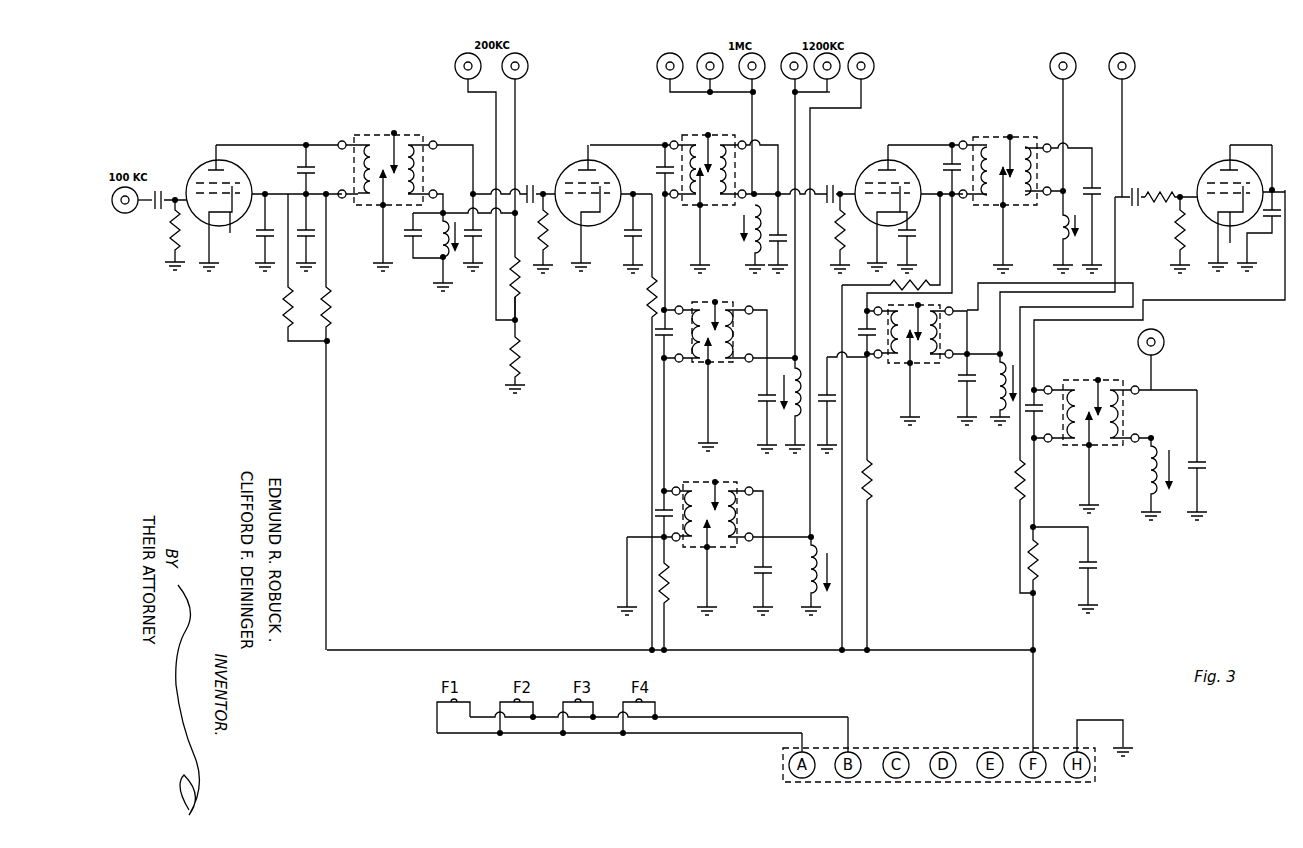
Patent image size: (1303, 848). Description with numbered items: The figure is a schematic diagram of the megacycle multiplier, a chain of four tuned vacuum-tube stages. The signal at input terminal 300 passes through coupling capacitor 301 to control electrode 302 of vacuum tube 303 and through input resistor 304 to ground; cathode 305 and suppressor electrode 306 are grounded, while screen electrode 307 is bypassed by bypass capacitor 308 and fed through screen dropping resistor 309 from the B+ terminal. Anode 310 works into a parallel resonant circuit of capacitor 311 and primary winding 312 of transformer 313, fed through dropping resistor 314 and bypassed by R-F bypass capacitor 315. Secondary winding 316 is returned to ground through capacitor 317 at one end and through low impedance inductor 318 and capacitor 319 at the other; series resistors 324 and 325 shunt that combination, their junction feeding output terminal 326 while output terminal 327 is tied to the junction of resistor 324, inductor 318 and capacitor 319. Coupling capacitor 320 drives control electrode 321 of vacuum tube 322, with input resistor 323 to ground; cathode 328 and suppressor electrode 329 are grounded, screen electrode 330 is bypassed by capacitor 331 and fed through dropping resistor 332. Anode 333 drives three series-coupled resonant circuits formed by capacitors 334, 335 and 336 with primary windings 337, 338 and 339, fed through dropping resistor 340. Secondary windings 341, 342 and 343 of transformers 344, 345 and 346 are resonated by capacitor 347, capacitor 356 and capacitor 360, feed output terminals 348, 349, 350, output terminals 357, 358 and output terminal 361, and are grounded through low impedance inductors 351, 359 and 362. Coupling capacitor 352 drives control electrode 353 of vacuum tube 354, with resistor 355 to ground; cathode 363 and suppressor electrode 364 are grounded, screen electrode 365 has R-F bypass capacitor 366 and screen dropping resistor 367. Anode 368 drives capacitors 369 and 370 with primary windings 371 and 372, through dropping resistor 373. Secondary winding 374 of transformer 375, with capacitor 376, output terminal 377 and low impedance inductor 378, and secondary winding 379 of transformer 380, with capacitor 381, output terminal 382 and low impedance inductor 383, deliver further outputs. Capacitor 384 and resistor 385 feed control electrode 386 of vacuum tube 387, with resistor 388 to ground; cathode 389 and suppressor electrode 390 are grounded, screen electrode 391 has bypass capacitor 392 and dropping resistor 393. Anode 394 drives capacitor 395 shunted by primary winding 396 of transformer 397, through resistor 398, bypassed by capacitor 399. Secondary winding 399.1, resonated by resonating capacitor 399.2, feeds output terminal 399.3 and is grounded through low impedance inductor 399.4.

The input terminal 300 is at (134, 212).
The coupling capacitor 301 is at (160, 190).
The control electrode 302 is at (231, 234).
The vacuum tube 303 is at (252, 180).
The input resistor 304 is at (172, 228).
The cathode 305 is at (206, 240).
The suppressor electrode 306 is at (237, 176).
The screen electrode 307 is at (197, 182).
The bypass capacitor 308 is at (262, 245).
The screen dropping resistor 309 is at (283, 303).
The anode 310 is at (216, 160).
The capacitor 311 is at (300, 160).
The primary winding 312 is at (340, 141).
The transformer 313 is at (371, 116).
The dropping resistor 314 is at (333, 294).
The R-F bypass capacitor 315 is at (306, 250).
The secondary winding 316 is at (434, 181).
The capacitor 317 is at (470, 250).
The low impedance inductor 318 is at (440, 262).
The capacitor 319 is at (410, 250).
The coupling capacitor 320 is at (530, 184).
The control electrode 321 is at (548, 225).
The vacuum tube 322 is at (559, 150).
The input resistor 323 is at (522, 276).
The resistor 324 is at (519, 316).
The resistor 325 is at (518, 372).
The output terminal 326 is at (455, 60).
The output terminal 327 is at (528, 67).
The cathode 328 is at (586, 240).
The suppressor electrode 329 is at (600, 171).
The screen electrode 330 is at (611, 181).
The capacitor 331 is at (630, 250).
The dropping resistor 332 is at (648, 290).
The anode 333 is at (592, 150).
The capacitor 334 is at (665, 160).
The capacitor 335 is at (655, 332).
The capacitor 336 is at (655, 508).
The primary winding 337 is at (676, 141).
The primary winding 338 is at (700, 360).
The primary winding 339 is at (696, 546).
The dropping resistor 340 is at (666, 600).
The secondary winding 341 is at (701, 206).
The secondary winding 342 is at (731, 363).
The secondary winding 343 is at (718, 548).
The transformer 344 is at (698, 118).
The transformer 345 is at (703, 295).
The interstage transformer 346 is at (700, 480).
The resonating capacitor 347 is at (777, 250).
The output terminal 348 is at (658, 70).
The output terminal 349 is at (704, 65).
The output terminal 350 is at (763, 59).
The low impedance inductor 351 is at (752, 245).
The coupling capacitor 352 is at (830, 184).
The control electrode 353 is at (884, 160).
The vacuum tube 354 is at (899, 128).
The resistor 355 is at (842, 290).
The capacitor 356 is at (762, 398).
The output terminal 357 is at (792, 93).
The output terminal 358 is at (831, 92).
The low impedance inductor 359 is at (790, 413).
The capacitor 360 is at (766, 568).
The output terminal 361 is at (873, 70).
The low impedance inductor 362 is at (806, 579).
The cathode 363 is at (845, 241).
The suppressor electrode 364 is at (905, 172).
The screen electrode 365 is at (905, 180).
The R-F bypass capacitor 366 is at (912, 241).
The screen dropping resistor 367 is at (915, 282).
The anode 368 is at (876, 178).
The capacitor 369 is at (954, 160).
The capacitor 370 is at (843, 342).
The primary winding 371 is at (965, 200).
The primary winding 372 is at (898, 363).
The dropping resistor 373 is at (870, 465).
The secondary winding 374 is at (1035, 200).
The transformer 375 is at (990, 123).
The capacitor 376 is at (1093, 180).
The output terminal 377 is at (1050, 66).
The low impedance inductor 378 is at (1058, 230).
The secondary winding 379 is at (915, 363).
The transformer 380 is at (958, 300).
The capacitor 381 is at (964, 385).
The output terminal 382 is at (1136, 68).
The low impedance inductor 383 is at (998, 415).
The capacitor 384 is at (1137, 188).
The resistor 385 is at (1166, 192).
The control electrode 386 is at (1206, 180).
The vacuum tube 387 is at (1209, 135).
The resistor 388 is at (1177, 228).
The cathode 389 is at (1220, 240).
The suppressor electrode 390 is at (1212, 175).
The screen electrode 391 is at (1226, 238).
The bypass capacitor 392 is at (1270, 230).
The dropping resistor 393 is at (1016, 478).
The anode 394 is at (1235, 160).
The capacitor 395 is at (1036, 385).
The primary winding 396 is at (1070, 446).
The transformer 397 is at (1075, 366).
The resistor 398 is at (1042, 560).
The capacitor 399 is at (1092, 560).
The secondary winding 399.1 is at (1104, 448).
The resonating capacitor 399.2 is at (1205, 460).
The output terminal 399.3 is at (1165, 352).
The low impedance inductor 399.4 is at (1156, 446).